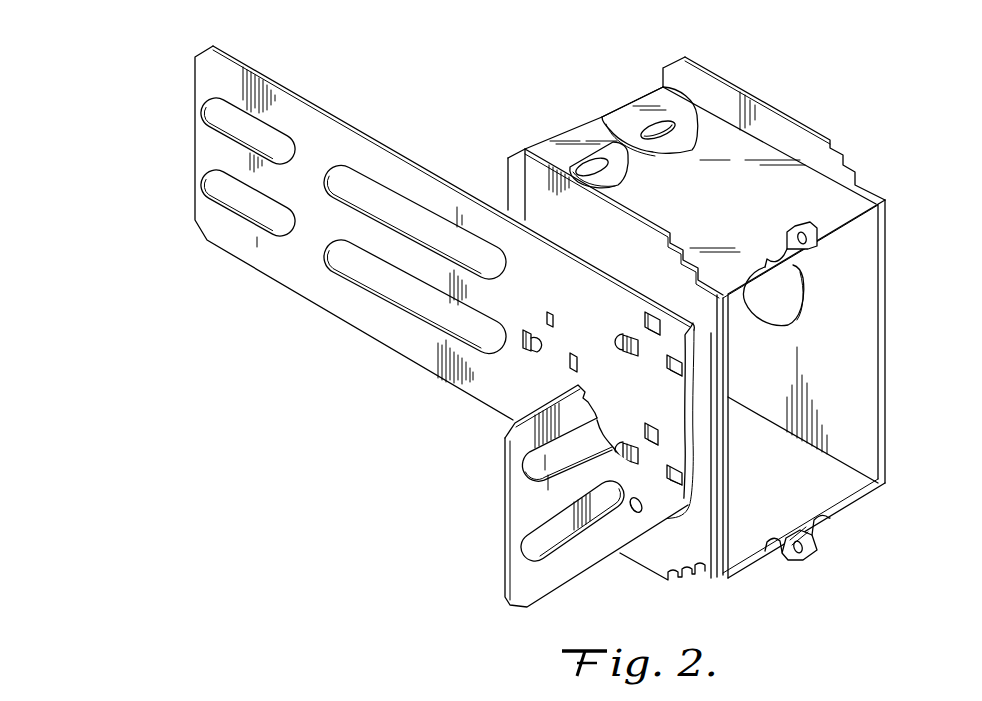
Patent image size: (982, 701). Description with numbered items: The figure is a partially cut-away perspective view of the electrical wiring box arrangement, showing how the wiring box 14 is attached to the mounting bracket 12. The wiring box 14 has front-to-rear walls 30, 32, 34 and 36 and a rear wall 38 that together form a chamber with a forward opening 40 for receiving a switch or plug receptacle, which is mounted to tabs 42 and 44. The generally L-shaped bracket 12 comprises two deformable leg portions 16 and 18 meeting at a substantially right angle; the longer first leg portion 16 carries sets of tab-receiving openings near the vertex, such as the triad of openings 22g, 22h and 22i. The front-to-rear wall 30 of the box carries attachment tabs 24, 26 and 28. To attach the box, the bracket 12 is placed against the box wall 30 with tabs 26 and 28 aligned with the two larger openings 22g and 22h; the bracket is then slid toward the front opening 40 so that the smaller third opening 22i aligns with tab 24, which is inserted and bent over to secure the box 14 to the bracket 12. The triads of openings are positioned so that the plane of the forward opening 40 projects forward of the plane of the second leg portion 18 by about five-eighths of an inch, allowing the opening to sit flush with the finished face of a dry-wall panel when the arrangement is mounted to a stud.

The mounting bracket 12 is at (327, 310).
The wiring box 14 is at (744, 567).
The first leg portion 16 is at (538, 282).
The second leg portion 18 is at (604, 543).
The tab-receiving opening 22g is at (637, 441).
The tab-receiving opening 22h is at (633, 353).
The tab-receiving opening 22i is at (523, 333).
The attachment tab 24 is at (535, 352).
The attachment tab 26 is at (612, 338).
The attachment tab 28 is at (613, 448).
The front-to-rear wall 30 is at (583, 240).
The front-to-rear wall 32 is at (747, 497).
The front-to-rear wall 34 is at (807, 376).
The front-to-rear wall 36 is at (729, 200).
The rear wall 38 is at (657, 93).
The forward opening 40 is at (832, 417).
The tab 42 is at (795, 224).
The tab 44 is at (805, 560).